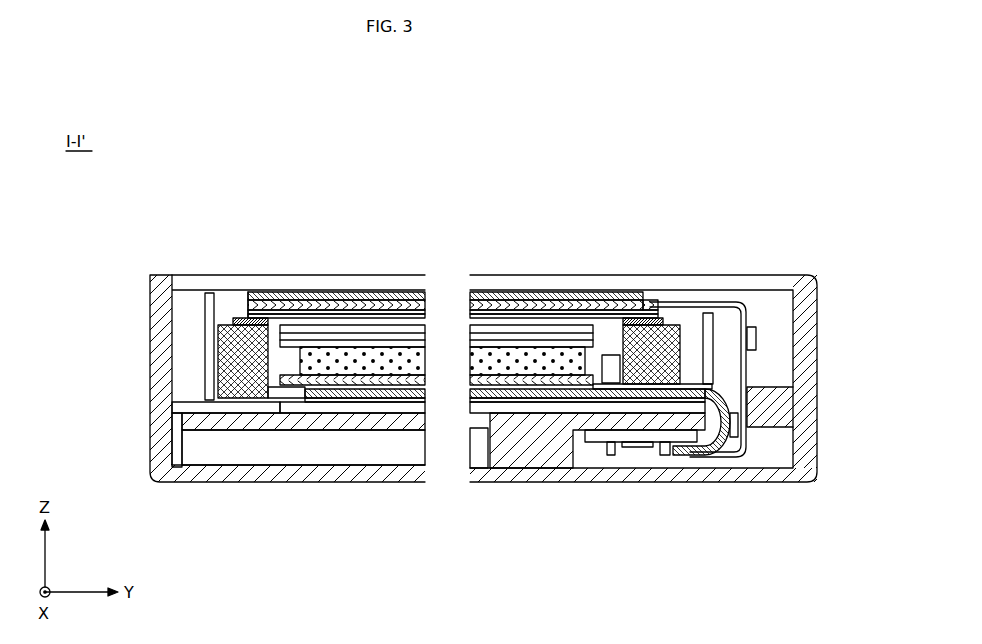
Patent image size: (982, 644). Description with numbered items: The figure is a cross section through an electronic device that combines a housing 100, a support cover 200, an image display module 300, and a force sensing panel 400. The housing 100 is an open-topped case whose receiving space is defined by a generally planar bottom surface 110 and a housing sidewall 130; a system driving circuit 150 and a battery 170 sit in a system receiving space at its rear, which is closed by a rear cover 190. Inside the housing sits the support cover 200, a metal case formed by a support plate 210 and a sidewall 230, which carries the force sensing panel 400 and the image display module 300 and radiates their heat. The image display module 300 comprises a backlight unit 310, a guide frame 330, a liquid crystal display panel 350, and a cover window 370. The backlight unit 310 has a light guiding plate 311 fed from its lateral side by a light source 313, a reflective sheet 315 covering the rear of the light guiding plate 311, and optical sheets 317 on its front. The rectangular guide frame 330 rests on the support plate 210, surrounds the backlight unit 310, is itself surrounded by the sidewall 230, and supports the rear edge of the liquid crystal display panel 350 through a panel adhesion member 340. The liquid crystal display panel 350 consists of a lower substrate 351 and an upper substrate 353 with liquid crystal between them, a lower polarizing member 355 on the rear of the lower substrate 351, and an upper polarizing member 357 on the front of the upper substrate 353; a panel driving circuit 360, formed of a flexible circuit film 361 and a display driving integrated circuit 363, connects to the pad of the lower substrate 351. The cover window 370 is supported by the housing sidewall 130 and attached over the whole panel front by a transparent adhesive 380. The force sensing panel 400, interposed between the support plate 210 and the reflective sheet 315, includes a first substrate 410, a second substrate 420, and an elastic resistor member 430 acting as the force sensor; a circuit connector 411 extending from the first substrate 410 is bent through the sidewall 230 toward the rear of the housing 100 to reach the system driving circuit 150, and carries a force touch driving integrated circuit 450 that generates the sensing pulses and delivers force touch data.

The housing 100 is at (262, 565).
The bottom surface 110 is at (267, 421).
The housing sidewall 130 is at (183, 402).
The system driving circuit 150 is at (645, 462).
The battery 170 is at (322, 457).
The rear cover 190 is at (157, 481).
The support cover 200 is at (75, 318).
The support plate 210 is at (264, 378).
The sidewall 230 is at (206, 316).
The image display module 300 is at (757, 148).
The backlight unit 310 is at (603, 200).
The light guiding plate 311 is at (527, 362).
The light source 313 is at (610, 355).
The reflective sheet 315 is at (549, 380).
The optical sheets 317 is at (496, 328).
The guide frame 330 is at (672, 325).
The panel adhesion member 340 is at (232, 318).
The liquid crystal display panel 350 is at (412, 200).
The lower substrate 351 is at (371, 312).
The upper substrate 353 is at (336, 304).
The lower polarizing member 355 is at (405, 316).
The upper polarizing member 357 is at (301, 294).
The panel driving circuit 360 is at (783, 200).
The flexible circuit film 361 is at (723, 302).
The display driving integrated circuit 363 is at (752, 327).
The cover window 370 is at (246, 310).
The transparent adhesive 380 is at (633, 291).
The force sensing panel 400 is at (562, 547).
The first substrate 410 is at (397, 389).
The circuit connector 411 is at (720, 450).
The second substrate 420 is at (551, 406).
The elastic resistor member 430 is at (508, 398).
The force touch driving integrated circuit 450 is at (736, 428).